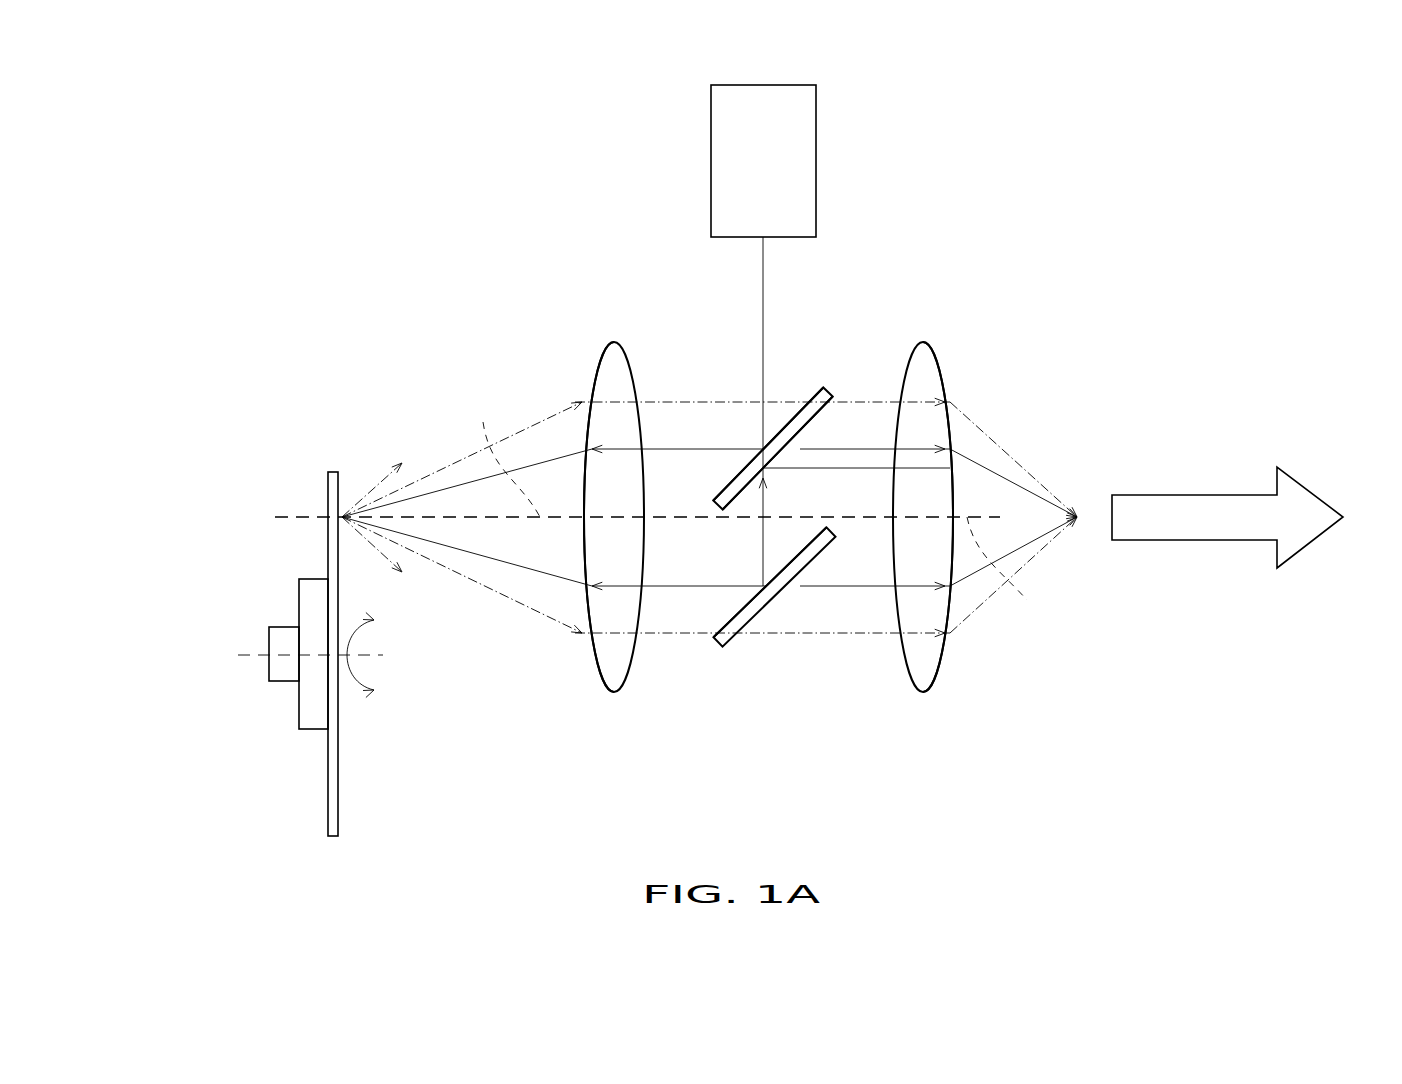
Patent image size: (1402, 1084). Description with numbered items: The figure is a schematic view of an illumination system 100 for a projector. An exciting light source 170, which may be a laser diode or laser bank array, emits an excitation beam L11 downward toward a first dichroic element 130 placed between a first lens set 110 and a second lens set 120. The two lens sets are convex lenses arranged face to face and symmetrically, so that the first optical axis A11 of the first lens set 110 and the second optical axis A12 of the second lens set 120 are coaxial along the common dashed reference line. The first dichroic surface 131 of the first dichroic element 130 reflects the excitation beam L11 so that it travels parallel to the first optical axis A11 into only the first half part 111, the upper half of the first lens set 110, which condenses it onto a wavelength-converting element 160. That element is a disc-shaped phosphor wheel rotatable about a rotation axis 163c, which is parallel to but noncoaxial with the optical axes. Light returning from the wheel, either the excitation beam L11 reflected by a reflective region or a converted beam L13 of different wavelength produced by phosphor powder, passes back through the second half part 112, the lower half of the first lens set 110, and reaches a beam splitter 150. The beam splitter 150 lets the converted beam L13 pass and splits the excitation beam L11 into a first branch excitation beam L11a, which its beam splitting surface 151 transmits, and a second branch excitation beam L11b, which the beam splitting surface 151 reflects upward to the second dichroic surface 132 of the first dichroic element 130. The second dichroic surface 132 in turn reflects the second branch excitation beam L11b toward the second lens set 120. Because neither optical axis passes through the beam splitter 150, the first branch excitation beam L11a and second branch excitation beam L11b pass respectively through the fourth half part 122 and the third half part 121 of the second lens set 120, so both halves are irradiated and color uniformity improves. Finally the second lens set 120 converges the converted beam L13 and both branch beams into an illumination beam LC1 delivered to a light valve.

The illumination system 100 is at (282, 220).
The first lens set 110 is at (612, 330).
The first half part 111 is at (605, 385).
The second half part 112 is at (604, 650).
The second lens set 120 is at (920, 330).
The third half part 121 is at (920, 385).
The fourth half part 122 is at (920, 650).
The first dichroic element 130 is at (828, 393).
The first dichroic surface 131 is at (815, 398).
The second dichroic surface 132 is at (822, 414).
The beam splitter 150 is at (750, 610).
The beam splitting surface 151 is at (722, 625).
The wavelength-converting element 160 is at (330, 490).
The rotation axis 163c is at (245, 660).
The exciting light source 170 is at (783, 181).
The excitation beam L11 is at (765, 262).
The first branch excitation beam L11a is at (878, 588).
The second branch excitation beam L11b is at (765, 505).
The converted beam L13 is at (447, 468).
The first optical axis A11 is at (501, 454).
The second optical axis A12 is at (1007, 575).
The illumination beam LC1 is at (1200, 512).